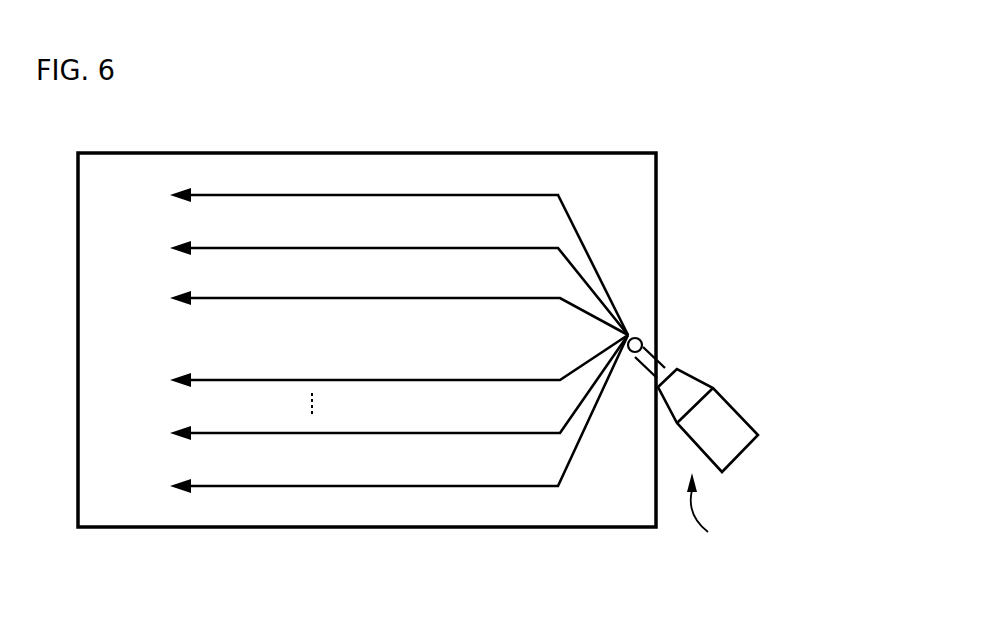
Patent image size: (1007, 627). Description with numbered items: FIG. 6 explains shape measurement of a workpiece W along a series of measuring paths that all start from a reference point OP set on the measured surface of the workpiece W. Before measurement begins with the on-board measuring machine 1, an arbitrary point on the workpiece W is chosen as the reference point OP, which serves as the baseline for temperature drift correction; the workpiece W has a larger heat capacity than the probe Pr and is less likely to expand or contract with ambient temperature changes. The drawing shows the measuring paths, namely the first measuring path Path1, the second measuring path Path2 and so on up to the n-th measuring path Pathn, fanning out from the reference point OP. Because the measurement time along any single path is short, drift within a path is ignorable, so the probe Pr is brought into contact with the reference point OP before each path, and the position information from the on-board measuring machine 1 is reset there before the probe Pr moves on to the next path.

The workpiece W is at (502, 152).
The reference point OP is at (632, 333).
The on-board measuring machine 1 is at (760, 402).
The probe Pr is at (719, 513).
The first measuring path Path1 is at (288, 195).
The second measuring path Path2 is at (288, 248).
The n-th measuring path Pathn is at (288, 486).